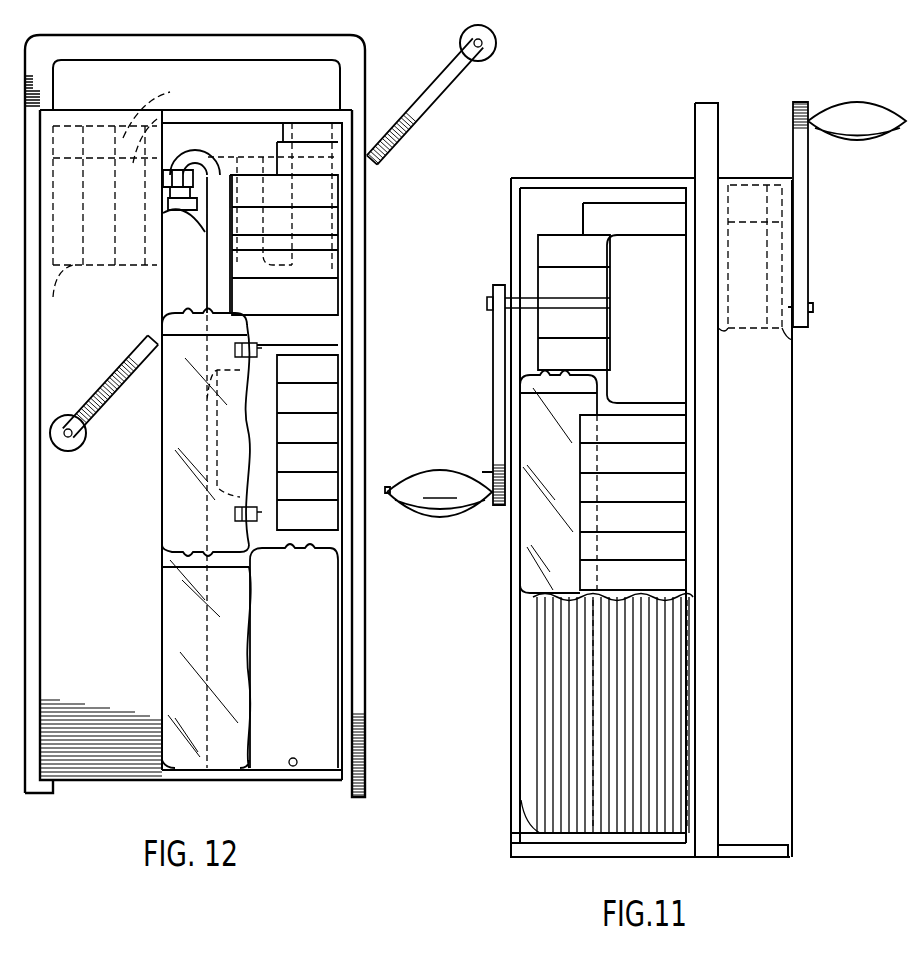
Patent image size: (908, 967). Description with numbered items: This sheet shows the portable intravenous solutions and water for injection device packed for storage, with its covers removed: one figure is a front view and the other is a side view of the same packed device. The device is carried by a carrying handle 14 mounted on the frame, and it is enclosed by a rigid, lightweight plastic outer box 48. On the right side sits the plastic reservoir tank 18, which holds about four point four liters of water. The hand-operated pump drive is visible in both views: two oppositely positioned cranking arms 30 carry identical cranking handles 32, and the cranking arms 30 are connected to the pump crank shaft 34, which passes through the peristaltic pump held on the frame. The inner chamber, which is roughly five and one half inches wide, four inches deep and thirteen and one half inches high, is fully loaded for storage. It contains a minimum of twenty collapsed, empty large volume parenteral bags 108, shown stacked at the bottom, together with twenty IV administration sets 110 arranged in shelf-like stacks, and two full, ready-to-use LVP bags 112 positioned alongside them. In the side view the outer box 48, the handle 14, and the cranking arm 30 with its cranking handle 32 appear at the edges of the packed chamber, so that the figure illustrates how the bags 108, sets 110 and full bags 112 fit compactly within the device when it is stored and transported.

In FIG. 11, the carrying handle 14 is at (708, 137).
In FIG. 11, the reservoir tank 18 is at (757, 403).
In FIG. 12, the cranking arm 30 is at (420, 108).
In FIG. 11, the cranking arm 30 is at (800, 243).
In FIG. 12, the cranking handle 32 is at (496, 44).
In FIG. 11, the cranking handle 32 is at (860, 123).
In FIG. 11, the pump crank shaft 34 is at (487, 303).
In FIG. 11, the outer box 48 is at (782, 532).
In FIG. 11, the large volume parenteral bag 108 is at (568, 682).
In FIG. 12, the IV administration set 110 is at (290, 160).
In FIG. 11, the IV administration set 110 is at (557, 253).
In FIG. 12, the LVP bag 112 is at (175, 490).
In FIG. 11, the LVP bag 112 is at (532, 557).